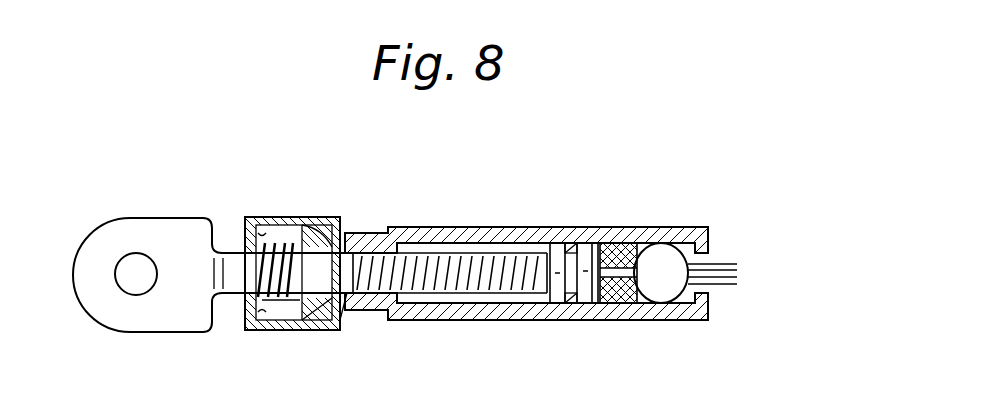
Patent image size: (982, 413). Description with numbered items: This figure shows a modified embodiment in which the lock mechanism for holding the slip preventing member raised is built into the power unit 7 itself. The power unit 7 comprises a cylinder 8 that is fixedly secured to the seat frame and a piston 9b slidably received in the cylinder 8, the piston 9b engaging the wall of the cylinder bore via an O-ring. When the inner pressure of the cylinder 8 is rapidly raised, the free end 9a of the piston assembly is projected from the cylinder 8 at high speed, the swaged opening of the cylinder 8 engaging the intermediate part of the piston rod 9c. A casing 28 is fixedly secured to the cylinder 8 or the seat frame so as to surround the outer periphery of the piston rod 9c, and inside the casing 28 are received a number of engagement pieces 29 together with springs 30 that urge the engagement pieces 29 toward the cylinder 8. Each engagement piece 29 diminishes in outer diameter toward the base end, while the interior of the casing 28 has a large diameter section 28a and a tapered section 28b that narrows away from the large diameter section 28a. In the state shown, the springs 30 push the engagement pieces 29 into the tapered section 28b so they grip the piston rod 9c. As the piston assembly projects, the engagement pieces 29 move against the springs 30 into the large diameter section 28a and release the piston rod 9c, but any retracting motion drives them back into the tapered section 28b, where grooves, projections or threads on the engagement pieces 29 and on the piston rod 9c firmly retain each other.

The power unit 7 is at (638, 188).
The cylinder 8 is at (482, 227).
The free end of the piston assembly 9a is at (203, 240).
The piston 9b is at (557, 250).
The piston rod 9c is at (430, 252).
The casing 28 is at (247, 322).
The large diameter section 28a is at (290, 226).
The tapered section 28b is at (333, 220).
The engagement pieces 29 is at (337, 312).
The springs 30 is at (277, 300).